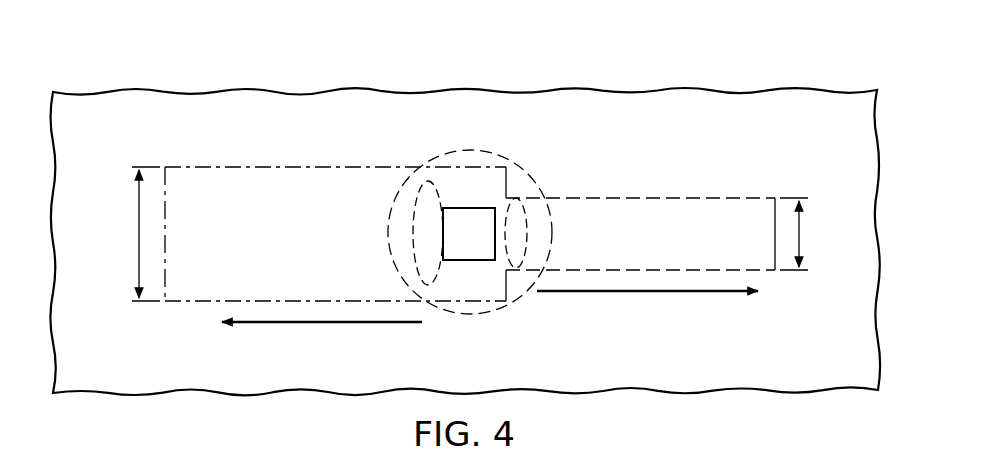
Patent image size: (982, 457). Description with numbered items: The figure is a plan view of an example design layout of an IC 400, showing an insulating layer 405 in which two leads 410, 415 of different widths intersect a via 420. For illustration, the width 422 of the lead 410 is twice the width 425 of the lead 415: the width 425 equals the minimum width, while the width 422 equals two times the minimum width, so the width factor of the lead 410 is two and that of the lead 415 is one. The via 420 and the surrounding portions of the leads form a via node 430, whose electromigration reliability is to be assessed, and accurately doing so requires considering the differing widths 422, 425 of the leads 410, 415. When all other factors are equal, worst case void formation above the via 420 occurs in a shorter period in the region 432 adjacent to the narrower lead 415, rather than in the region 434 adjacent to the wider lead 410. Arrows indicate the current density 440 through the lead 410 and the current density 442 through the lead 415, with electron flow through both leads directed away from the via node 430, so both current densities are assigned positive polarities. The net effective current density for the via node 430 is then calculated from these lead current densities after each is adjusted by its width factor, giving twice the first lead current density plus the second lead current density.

The IC 400 is at (288, 62).
The insulating layer 405 is at (652, 86).
The lead 410 is at (246, 157).
The lead 415 is at (682, 181).
The via 420 is at (467, 260).
The width 422 is at (139, 234).
The width 425 is at (804, 236).
The via node 430 is at (512, 165).
The region 432 is at (527, 224).
The region 434 is at (413, 237).
The current density 440 is at (330, 326).
The current density 442 is at (638, 294).